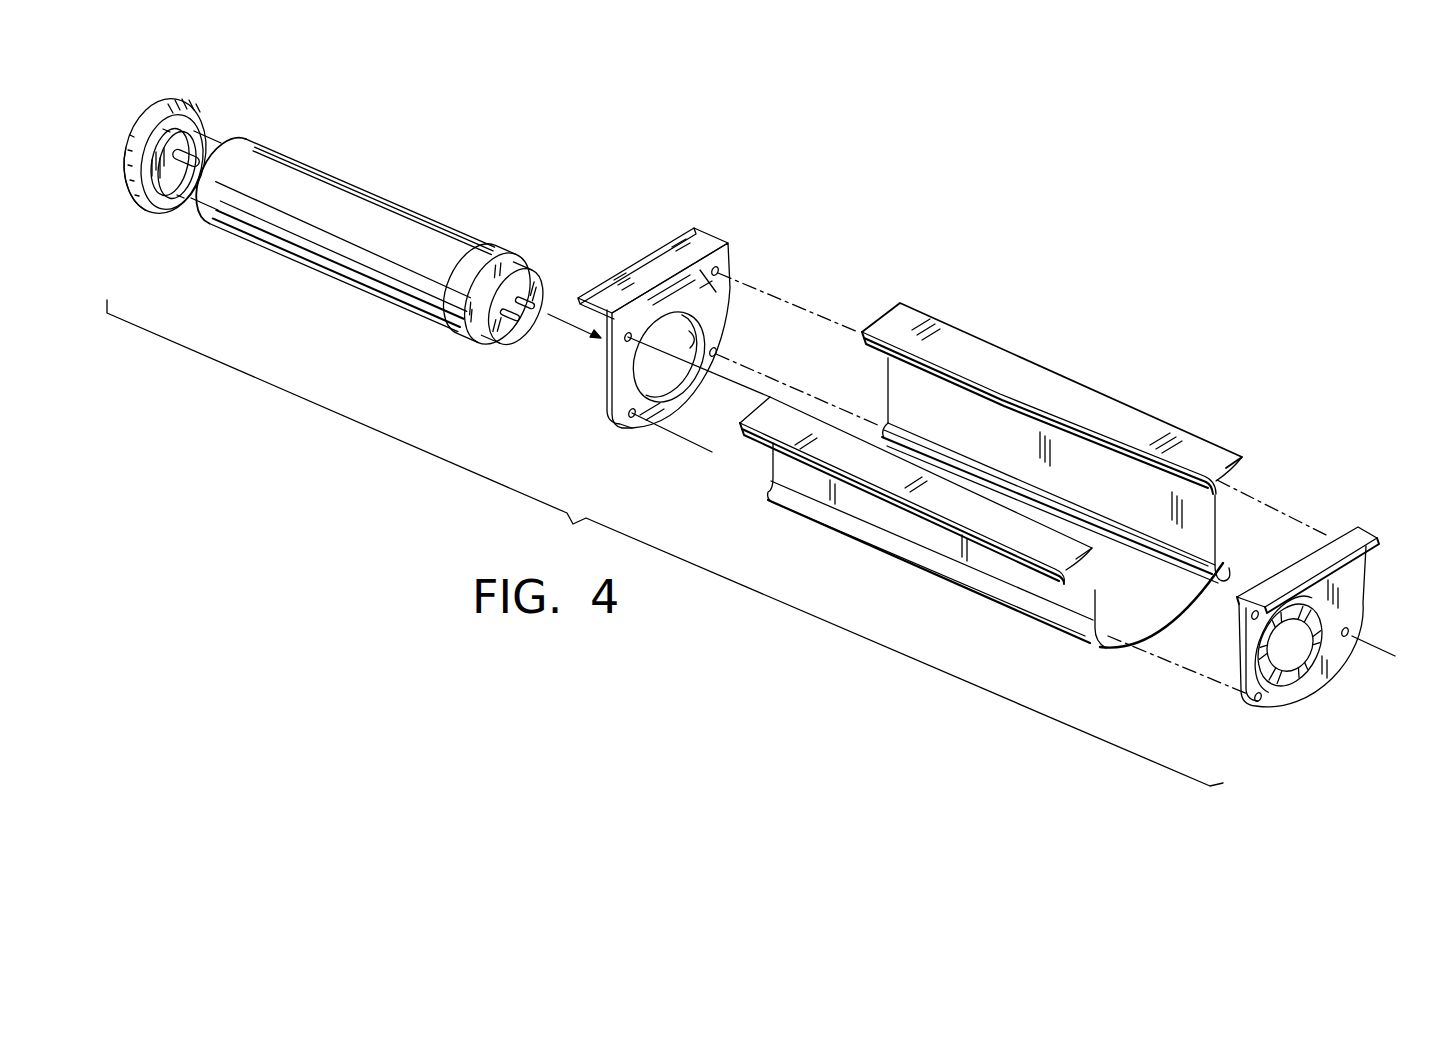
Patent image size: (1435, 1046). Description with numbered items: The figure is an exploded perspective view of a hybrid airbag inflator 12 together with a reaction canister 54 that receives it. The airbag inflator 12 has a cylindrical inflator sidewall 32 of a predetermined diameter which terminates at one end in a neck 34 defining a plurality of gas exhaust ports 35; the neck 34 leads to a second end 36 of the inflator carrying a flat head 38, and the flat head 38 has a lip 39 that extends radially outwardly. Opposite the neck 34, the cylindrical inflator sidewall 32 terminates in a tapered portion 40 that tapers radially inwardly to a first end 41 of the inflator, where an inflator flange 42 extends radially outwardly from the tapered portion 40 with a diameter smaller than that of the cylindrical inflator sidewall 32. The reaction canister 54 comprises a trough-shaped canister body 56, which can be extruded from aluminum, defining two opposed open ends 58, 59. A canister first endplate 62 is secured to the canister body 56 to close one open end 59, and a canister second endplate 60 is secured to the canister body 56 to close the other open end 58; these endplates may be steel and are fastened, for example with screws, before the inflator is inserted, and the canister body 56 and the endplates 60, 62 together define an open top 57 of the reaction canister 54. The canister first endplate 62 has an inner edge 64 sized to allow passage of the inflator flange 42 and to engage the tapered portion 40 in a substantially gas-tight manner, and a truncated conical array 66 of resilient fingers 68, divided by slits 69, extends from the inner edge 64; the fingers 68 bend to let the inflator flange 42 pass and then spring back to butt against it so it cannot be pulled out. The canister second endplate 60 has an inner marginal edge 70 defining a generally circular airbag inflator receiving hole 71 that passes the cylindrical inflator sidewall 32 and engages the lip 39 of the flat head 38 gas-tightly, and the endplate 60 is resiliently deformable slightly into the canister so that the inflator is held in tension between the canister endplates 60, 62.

The airbag inflator 12 is at (347, 217).
The cylindrical inflator sidewall 32 is at (293, 167).
The neck 34 is at (190, 190).
The gas exhaust ports 35 is at (180, 165).
The second end 36 is at (126, 186).
The flat head 38 is at (155, 126).
The lip 39 is at (191, 105).
The tapered portion 40 is at (495, 250).
The first end 41 is at (523, 323).
The inflator flange 42 is at (533, 271).
The reaction canister 54 is at (1051, 419).
The trough-shaped canister body 56 is at (933, 543).
The open top 57 is at (1098, 457).
The open end 58 is at (887, 366).
The open end 59 is at (1222, 517).
The canister second endplate 60 is at (682, 325).
The canister first endplate 62 is at (1350, 592).
The inner edge 64 is at (1298, 631).
The truncated conical array 66 is at (1345, 644).
The resilient fingers 68 is at (1300, 685).
The slits 69 is at (1245, 686).
The inner marginal edge 70 is at (700, 316).
The airbag inflator receiving hole 71 is at (693, 340).